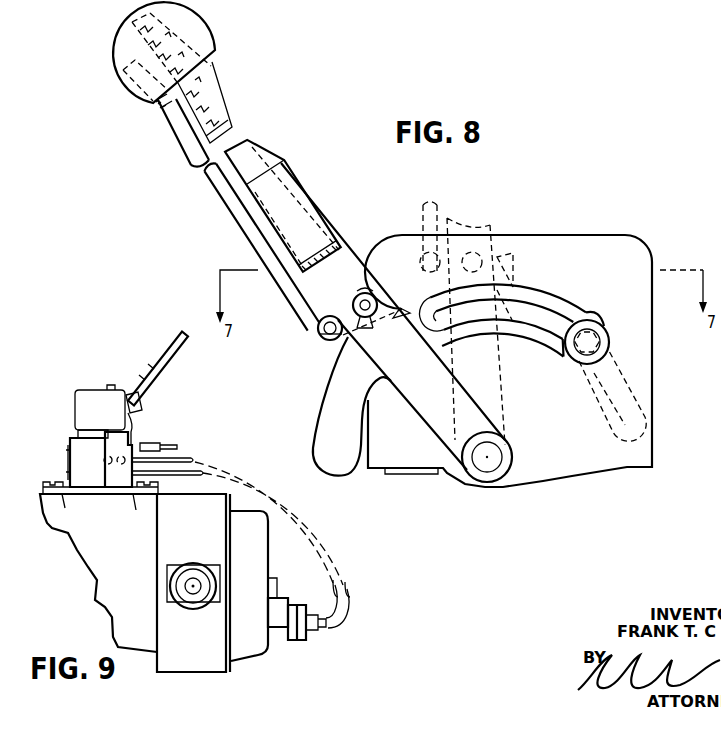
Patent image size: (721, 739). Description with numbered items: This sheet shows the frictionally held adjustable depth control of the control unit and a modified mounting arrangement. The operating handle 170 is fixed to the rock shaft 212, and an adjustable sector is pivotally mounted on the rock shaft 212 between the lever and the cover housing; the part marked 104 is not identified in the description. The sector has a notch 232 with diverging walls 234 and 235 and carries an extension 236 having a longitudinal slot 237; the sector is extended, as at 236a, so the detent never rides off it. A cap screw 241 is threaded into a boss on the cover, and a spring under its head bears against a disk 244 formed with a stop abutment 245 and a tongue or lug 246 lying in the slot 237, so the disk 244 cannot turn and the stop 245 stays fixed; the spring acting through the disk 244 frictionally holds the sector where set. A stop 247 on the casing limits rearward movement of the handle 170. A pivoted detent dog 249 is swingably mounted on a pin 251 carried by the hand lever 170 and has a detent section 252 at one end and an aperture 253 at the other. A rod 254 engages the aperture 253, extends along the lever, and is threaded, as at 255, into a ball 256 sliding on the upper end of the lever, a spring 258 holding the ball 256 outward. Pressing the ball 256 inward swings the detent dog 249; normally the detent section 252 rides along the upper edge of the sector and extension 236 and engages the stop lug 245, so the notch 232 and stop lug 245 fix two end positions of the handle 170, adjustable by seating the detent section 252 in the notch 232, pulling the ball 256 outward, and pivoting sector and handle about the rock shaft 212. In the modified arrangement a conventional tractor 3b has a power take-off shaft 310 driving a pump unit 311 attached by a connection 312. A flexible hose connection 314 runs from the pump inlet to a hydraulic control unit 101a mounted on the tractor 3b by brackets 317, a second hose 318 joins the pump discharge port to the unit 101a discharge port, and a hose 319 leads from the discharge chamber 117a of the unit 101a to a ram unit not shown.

In FIG. 8, the mounting plate 104 is at (578, 242).
In FIG. 8, the operating handle 170 is at (492, 222).
In FIG. 8, the rock shaft 212 is at (490, 457).
In FIG. 8, the notch 232 is at (400, 320).
In FIG. 8, the diverging wall 234 is at (400, 317).
In FIG. 8, the diverging wall 235 is at (441, 303).
In FIG. 8, the extension 236 is at (550, 302).
In FIG. 8, the sector extension 236a is at (338, 380).
In FIG. 8, the slot 237 is at (523, 318).
In FIG. 8, the cap screw 241 is at (599, 340).
In FIG. 8, the plate or disk 244 is at (579, 372).
In FIG. 8, the stop abutment 245 is at (586, 309).
In FIG. 8, the tongue or lug 246 is at (579, 360).
In FIG. 8, the stop 247 is at (411, 482).
In FIG. 8, the detent dog 249 is at (381, 290).
In FIG. 8, the pin 251 is at (329, 340).
In FIG. 8, the detent section 252 is at (388, 291).
In FIG. 8, the aperture 253 is at (317, 324).
In FIG. 8, the rod 254 is at (242, 211).
In FIG. 8, the threaded end 255 is at (158, 112).
In FIG. 8, the ball 256 is at (118, 44).
In FIG. 8, the spring 258 is at (203, 78).
In FIG. 9, the tractor 3b is at (78, 565).
In FIG. 9, the hydraulic control unit 101a is at (65, 383).
In FIG. 9, the discharge chamber 117a is at (140, 443).
In FIG. 9, the power take-off shaft 310 is at (318, 633).
In FIG. 9, the pump unit 311 is at (296, 648).
In FIG. 9, the connection 312 is at (283, 600).
In FIG. 9, the flexible hose connection 314 is at (272, 502).
In FIG. 9, the brackets 317 is at (100, 510).
In FIG. 9, the second hose 318 is at (310, 520).
In FIG. 9, the hose 319 is at (175, 445).